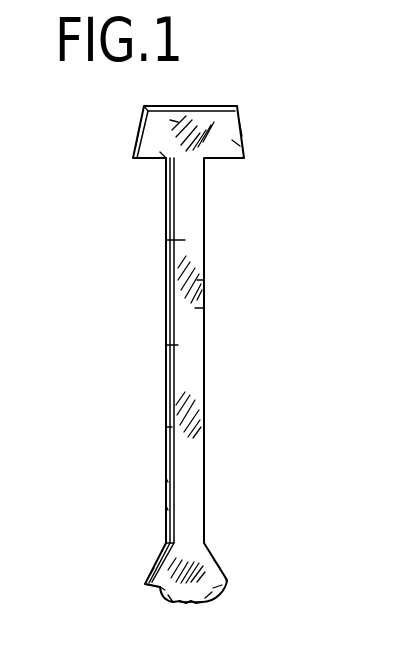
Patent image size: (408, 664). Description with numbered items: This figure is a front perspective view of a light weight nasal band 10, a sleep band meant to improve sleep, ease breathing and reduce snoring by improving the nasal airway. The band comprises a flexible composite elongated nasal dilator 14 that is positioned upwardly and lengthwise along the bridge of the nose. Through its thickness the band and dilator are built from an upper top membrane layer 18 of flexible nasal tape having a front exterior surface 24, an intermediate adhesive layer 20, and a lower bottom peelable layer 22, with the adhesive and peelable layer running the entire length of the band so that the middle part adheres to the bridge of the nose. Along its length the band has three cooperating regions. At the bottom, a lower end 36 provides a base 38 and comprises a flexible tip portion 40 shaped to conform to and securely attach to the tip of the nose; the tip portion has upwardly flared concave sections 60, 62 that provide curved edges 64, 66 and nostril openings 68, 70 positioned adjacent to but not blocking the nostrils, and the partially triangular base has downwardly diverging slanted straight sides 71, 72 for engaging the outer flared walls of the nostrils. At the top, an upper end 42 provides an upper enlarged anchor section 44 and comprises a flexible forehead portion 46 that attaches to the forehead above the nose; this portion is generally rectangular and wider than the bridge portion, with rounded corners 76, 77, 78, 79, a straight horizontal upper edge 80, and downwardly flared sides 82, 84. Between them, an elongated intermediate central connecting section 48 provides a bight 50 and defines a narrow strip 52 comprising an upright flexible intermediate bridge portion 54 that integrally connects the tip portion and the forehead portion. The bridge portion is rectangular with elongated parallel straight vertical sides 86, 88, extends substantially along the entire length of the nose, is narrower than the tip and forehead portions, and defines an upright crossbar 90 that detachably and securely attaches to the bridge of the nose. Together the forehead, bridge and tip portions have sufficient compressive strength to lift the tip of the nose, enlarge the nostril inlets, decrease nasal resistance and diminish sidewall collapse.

The nasal band 10 is at (153, 305).
The nasal dilator 14 is at (205, 543).
The upper top membrane layer 18 is at (197, 398).
The intermediate adhesive layer 20 is at (166, 508).
The lower bottom peelable layer 22 is at (166, 480).
The front exterior surface 24 is at (197, 280).
The lower end 36 is at (203, 563).
The base 38 is at (173, 552).
The flexible tip portion 40 is at (192, 602).
The upper end 42 is at (167, 132).
The upper enlarged anchor section 44 is at (162, 150).
The forehead portion 46 is at (232, 143).
The intermediate central connecting section 48 is at (185, 240).
The bight 50 is at (204, 203).
The narrow strip 52 is at (178, 345).
The intermediate bridge portion 54 is at (195, 308).
The upwardly flared concave section 60 is at (160, 588).
The upwardly flared concave section 62 is at (227, 580).
The curved edge 64 is at (165, 588).
The curved edge 66 is at (213, 588).
The nostril opening 68 is at (175, 598).
The nostril opening 70 is at (210, 593).
The slanted straight side 71 is at (152, 568).
The slanted straight side 72 is at (217, 565).
The rounded corner 76 is at (145, 106).
The rounded corner 77 is at (238, 106).
The rounded corner 78 is at (140, 158).
The rounded corner 79 is at (245, 158).
The straight horizontal upper edge 80 is at (212, 106).
The downwardly flared side 82 is at (133, 143).
The downwardly flared side 84 is at (242, 128).
The straight vertical side 86 is at (172, 427).
The straight vertical side 88 is at (205, 428).
The upright crossbar 90 is at (192, 485).